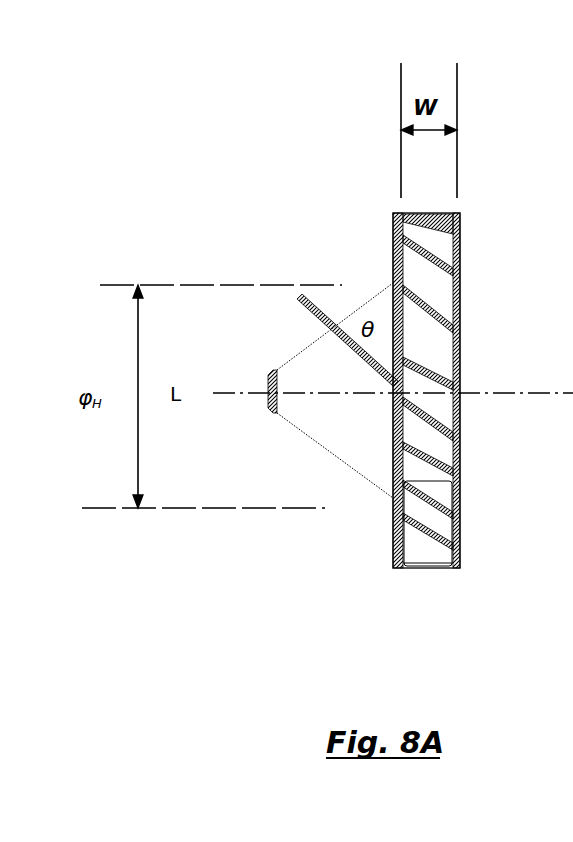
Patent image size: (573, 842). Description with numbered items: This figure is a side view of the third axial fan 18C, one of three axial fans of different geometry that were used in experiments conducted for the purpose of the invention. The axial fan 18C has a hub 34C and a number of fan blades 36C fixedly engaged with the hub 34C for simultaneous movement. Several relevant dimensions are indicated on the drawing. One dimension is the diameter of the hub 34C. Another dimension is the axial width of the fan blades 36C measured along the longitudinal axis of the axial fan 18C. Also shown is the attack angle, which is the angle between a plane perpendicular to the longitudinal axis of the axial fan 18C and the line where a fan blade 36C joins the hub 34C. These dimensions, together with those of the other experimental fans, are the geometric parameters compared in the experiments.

The third axial fan 18C is at (382, 302).
The hub 34C is at (380, 455).
The fan blades 36C is at (438, 302).